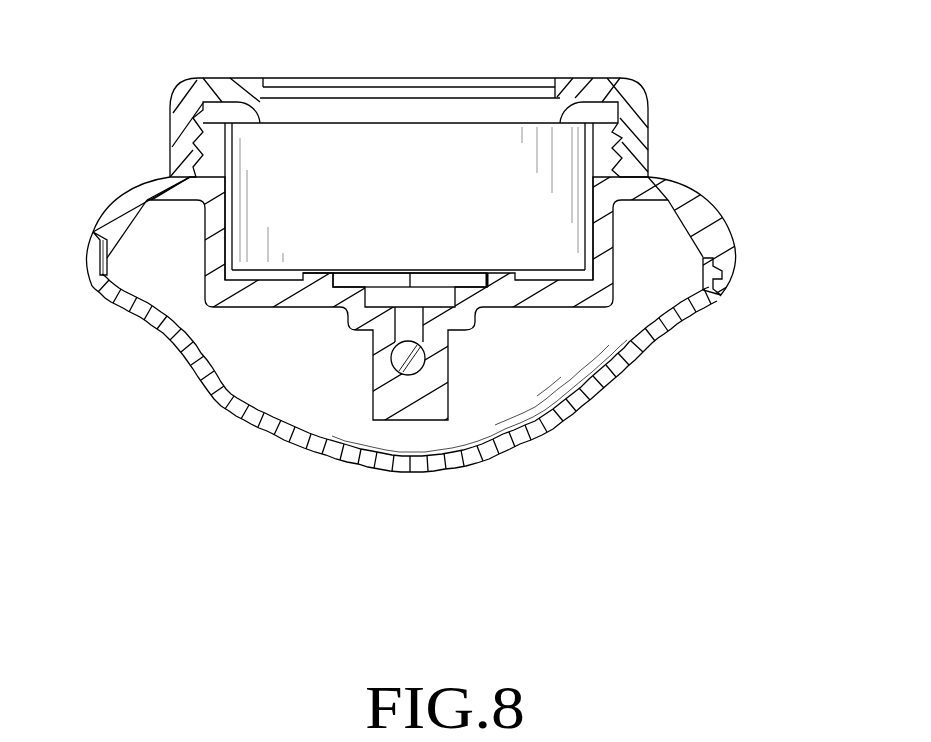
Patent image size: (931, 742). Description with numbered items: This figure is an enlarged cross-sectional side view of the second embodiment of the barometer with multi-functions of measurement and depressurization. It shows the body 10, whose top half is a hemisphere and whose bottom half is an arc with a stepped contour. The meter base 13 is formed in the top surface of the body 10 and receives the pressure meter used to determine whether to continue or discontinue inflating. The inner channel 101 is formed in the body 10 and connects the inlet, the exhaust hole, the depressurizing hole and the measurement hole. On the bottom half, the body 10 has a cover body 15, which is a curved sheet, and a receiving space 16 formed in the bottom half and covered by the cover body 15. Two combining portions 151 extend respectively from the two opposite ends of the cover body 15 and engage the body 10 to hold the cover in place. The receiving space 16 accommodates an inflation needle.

The body 10 is at (690, 195).
The meter base 13 is at (245, 302).
The cover body 15 is at (505, 447).
The receiving space 16 is at (528, 362).
The combining portion 151 is at (97, 253).
The inner channel 101 is at (405, 365).